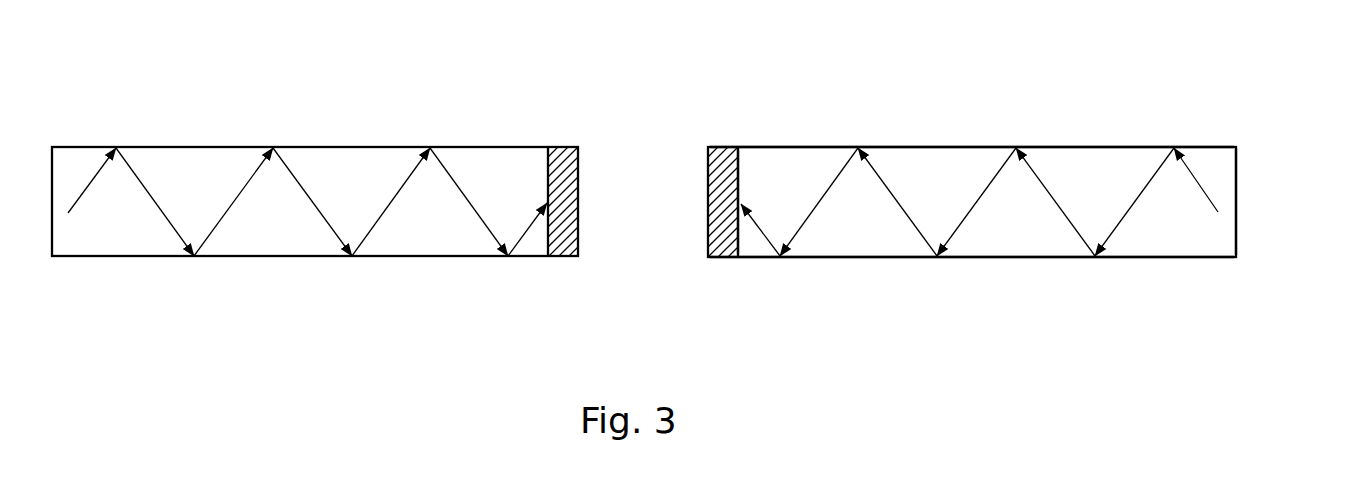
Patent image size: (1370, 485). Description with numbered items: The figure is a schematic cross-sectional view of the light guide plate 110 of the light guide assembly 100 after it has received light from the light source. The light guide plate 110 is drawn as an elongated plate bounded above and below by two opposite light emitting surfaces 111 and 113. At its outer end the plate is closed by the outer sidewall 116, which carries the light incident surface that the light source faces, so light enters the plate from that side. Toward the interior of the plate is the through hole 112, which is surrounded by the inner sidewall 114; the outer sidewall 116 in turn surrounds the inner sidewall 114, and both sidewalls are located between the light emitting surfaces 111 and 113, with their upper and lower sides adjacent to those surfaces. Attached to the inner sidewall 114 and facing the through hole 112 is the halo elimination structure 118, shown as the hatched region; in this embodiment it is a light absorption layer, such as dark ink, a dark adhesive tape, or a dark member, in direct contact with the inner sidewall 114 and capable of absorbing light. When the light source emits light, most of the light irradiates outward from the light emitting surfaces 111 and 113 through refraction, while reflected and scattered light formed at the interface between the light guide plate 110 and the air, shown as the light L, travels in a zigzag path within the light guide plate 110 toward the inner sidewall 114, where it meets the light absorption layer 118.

The light guide assembly 100 is at (88, 52).
The light guide plate 110 is at (1013, 192).
The light emitting surface 111 is at (1048, 145).
The through hole 112 is at (626, 171).
The light emitting surface 113 is at (1048, 259).
The inner sidewall 114 is at (741, 192).
The outer sidewall 116 is at (1239, 200).
The halo elimination structure 118 is at (722, 158).
The light L is at (762, 237).